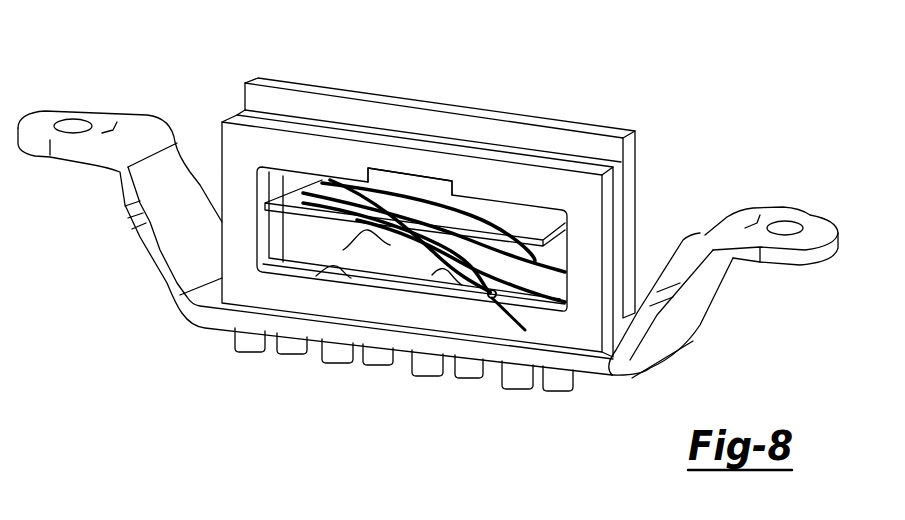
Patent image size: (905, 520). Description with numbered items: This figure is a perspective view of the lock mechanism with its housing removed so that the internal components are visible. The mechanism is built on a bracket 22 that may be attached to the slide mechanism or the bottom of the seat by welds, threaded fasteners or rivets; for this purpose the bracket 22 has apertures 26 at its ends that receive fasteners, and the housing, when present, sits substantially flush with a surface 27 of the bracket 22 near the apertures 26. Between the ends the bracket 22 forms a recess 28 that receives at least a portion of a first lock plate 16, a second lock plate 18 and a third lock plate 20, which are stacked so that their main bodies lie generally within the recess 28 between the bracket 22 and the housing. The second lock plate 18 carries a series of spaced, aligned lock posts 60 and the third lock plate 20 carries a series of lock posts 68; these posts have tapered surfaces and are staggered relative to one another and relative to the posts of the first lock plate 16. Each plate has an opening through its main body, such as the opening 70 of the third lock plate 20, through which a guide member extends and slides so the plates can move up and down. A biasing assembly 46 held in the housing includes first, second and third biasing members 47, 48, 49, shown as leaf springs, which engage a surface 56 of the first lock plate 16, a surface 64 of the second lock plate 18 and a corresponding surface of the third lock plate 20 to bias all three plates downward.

The first lock plate 16 is at (625, 127).
The second lock plate 18 is at (493, 147).
The third lock plate 20 is at (235, 115).
The bracket 22 is at (705, 318).
The apertures 26 is at (73, 119).
The surface 27 is at (113, 125).
The recess 28 is at (200, 310).
The biasing assembly 46 is at (423, 184).
The first biasing member 47 is at (537, 260).
The second biasing member 48 is at (508, 287).
The third biasing member 49 is at (497, 300).
The surface 56 is at (343, 250).
The lock posts 60 is at (292, 357).
The surface 64 is at (432, 275).
The lock posts 68 is at (249, 355).
The opening 70 is at (316, 276).